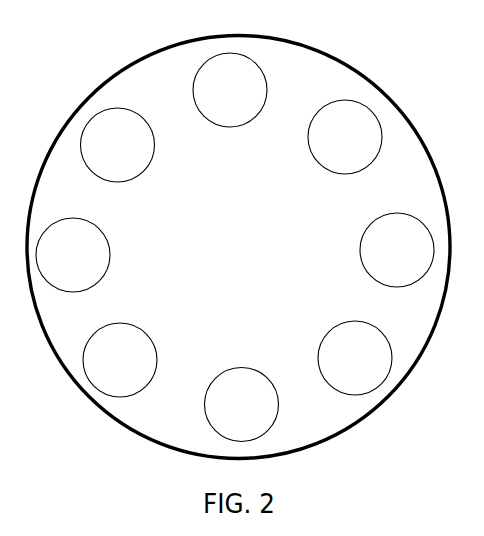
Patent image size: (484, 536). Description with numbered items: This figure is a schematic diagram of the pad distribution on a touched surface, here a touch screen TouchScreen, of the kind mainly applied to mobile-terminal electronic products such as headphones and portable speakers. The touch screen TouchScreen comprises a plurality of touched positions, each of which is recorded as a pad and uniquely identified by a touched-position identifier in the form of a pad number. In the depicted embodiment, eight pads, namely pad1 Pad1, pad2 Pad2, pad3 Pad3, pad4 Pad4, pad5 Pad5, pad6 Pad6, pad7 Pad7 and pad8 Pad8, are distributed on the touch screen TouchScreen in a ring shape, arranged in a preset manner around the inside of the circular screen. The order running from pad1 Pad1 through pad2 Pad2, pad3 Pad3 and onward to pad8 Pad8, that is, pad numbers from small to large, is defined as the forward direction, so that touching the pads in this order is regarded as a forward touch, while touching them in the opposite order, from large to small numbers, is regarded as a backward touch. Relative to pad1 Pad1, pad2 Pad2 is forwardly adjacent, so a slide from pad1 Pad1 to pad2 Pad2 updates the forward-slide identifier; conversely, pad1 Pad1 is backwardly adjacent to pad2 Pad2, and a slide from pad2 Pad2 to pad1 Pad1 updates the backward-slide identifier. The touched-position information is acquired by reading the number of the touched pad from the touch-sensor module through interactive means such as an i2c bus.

The touch screen TouchScreen is at (238, 247).
The pad1 Pad1 is at (355, 358).
The pad2 Pad2 is at (242, 405).
The pad3 Pad3 is at (120, 360).
The pad4 Pad4 is at (73, 255).
The pad5 Pad5 is at (118, 145).
The pad6 Pad6 is at (230, 90).
The pad7 Pad7 is at (345, 137).
The pad8 Pad8 is at (397, 250).